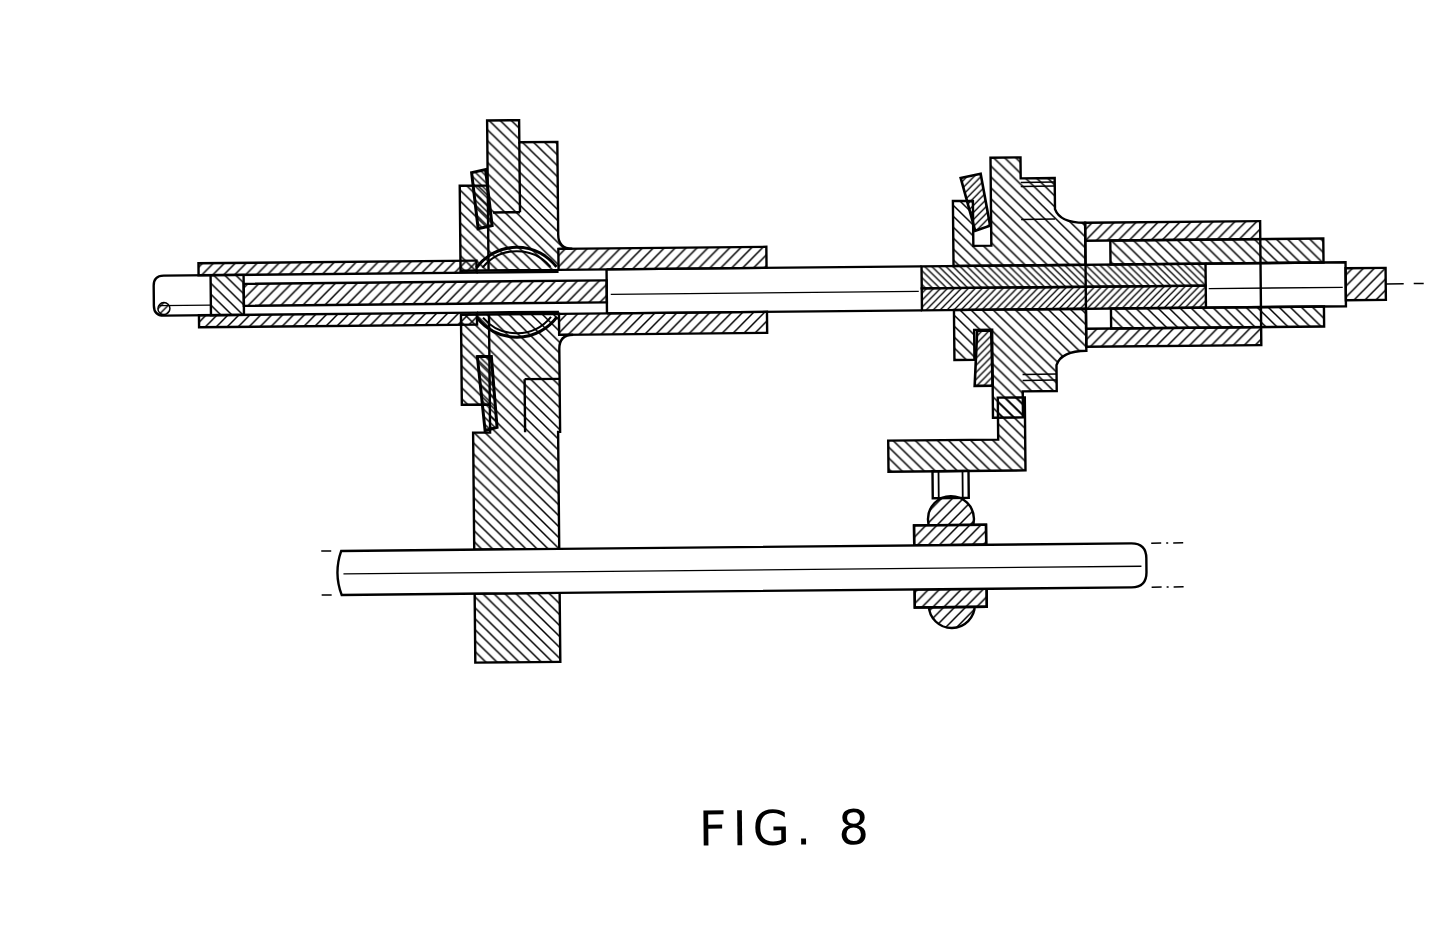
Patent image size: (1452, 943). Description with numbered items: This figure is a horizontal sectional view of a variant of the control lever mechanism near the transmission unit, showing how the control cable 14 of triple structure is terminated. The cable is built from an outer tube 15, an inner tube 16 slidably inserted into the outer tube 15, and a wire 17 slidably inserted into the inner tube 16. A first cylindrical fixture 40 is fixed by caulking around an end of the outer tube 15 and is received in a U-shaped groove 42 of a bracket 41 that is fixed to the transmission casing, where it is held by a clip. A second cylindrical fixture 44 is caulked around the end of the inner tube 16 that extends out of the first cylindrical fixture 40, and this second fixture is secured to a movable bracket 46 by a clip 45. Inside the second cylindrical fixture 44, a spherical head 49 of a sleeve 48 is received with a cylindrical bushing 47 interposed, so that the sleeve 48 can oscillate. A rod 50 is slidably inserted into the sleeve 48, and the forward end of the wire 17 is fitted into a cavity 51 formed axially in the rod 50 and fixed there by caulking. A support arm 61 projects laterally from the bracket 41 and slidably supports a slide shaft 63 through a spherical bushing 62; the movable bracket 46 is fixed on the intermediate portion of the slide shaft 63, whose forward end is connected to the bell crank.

The control cable 14 is at (1346, 142).
The outer tube 15 is at (1280, 243).
The inner tube 16 is at (849, 266).
The wire 17 is at (1374, 272).
The first cylindrical fixture 40 is at (1205, 352).
The bracket 41 is at (1018, 450).
The U-shaped groove 42 is at (975, 178).
The second cylindrical fixture 44 is at (626, 247).
The clip 45 is at (480, 172).
The movable bracket 46 is at (515, 128).
The cylindrical bushing 47 is at (480, 262).
The sleeve 48 is at (352, 258).
The spherical head 49 is at (548, 248).
The rod 50 is at (170, 266).
The cavity 51 is at (272, 280).
The support arm 61 is at (962, 632).
The spherical bushing 62 is at (922, 600).
The slide shaft 63 is at (712, 592).